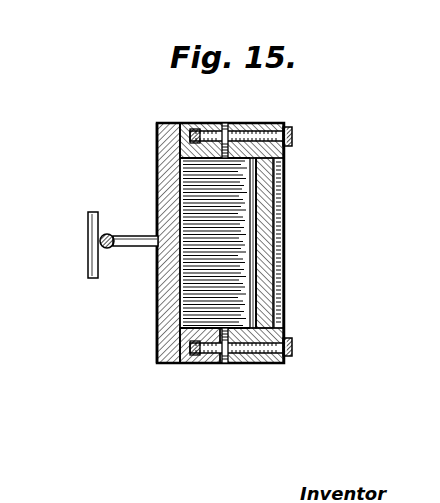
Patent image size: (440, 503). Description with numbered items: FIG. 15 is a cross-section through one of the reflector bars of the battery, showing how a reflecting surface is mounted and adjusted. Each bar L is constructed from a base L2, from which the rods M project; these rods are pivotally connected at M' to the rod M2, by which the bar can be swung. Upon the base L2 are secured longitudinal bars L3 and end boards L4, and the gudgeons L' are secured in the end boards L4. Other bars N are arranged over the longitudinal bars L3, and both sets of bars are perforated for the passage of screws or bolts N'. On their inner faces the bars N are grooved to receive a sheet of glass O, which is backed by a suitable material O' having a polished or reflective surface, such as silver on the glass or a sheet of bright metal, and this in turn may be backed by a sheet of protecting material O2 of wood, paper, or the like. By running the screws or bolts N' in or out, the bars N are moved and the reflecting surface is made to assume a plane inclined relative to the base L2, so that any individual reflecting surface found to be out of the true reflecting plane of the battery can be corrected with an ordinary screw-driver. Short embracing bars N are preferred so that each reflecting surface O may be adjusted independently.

The bar L is at (220, 256).
The gudgeons L' is at (235, 243).
The base L2 is at (157, 166).
The longitudinal bars L3 is at (198, 383).
The end boards L4 is at (215, 243).
The rods M is at (133, 270).
The pivotal connection M' is at (120, 224).
The rod M2 is at (88, 241).
The bars N is at (236, 255).
The screws or bolts N' is at (315, 238).
The sheet of glass O is at (297, 243).
The backing material O' is at (294, 243).
The protecting material O2 is at (254, 295).